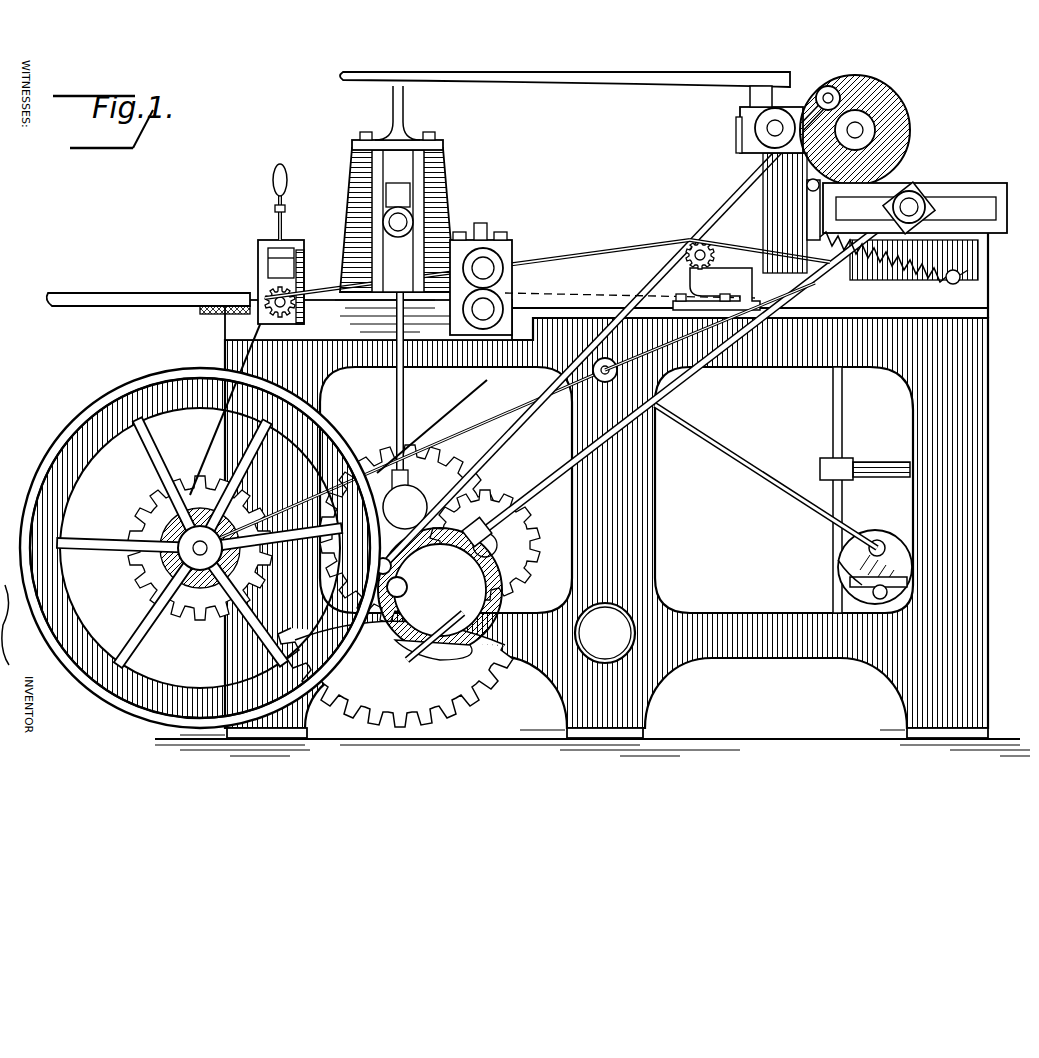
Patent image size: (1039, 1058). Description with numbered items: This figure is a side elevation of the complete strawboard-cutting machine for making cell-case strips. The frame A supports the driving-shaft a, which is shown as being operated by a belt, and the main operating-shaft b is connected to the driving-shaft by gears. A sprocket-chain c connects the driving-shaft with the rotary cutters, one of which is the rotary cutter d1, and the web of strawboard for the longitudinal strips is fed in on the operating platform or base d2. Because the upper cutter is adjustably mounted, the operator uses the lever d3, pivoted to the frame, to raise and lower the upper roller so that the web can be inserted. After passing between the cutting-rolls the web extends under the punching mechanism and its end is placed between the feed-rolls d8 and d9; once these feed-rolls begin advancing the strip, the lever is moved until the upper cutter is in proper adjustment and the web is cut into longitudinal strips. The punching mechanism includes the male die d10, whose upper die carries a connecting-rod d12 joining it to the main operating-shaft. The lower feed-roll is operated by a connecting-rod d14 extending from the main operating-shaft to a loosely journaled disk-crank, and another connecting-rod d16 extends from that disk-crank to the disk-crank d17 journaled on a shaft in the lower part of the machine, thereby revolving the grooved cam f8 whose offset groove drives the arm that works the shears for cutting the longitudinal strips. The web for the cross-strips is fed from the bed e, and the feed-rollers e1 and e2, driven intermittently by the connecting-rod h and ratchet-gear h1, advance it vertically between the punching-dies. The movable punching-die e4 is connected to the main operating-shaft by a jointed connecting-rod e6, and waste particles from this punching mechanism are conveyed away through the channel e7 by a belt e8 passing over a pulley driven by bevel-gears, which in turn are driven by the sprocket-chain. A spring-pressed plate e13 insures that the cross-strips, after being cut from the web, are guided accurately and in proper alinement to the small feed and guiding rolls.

The frame A is at (989, 402).
The driving-shaft a is at (133, 521).
The main operating-shaft b is at (388, 587).
The sprocket-chain c is at (530, 270).
The rotary cutter d1 is at (258, 297).
The operating platform or base d2 is at (187, 288).
The lever d3 is at (286, 188).
The upper feed-roll d8 is at (488, 263).
The lower feed-roll d9 is at (486, 308).
The male die d10 is at (397, 197).
The connecting-rod d12 is at (404, 403).
The connecting-rod d14 is at (480, 400).
The connecting-rod d16 is at (760, 449).
The disk-crank d17 is at (890, 543).
The bed e is at (603, 77).
The feed-roller e1 is at (792, 100).
The feed-roller e2 is at (967, 270).
The movable punching-die e4 is at (943, 200).
The connecting-rod e6 is at (688, 385).
The channel e7 is at (738, 232).
The belt e8 is at (727, 233).
The spring-pressed plate e13 is at (808, 212).
The connecting-rod h is at (753, 168).
The ratchet-gear h1 is at (890, 103).
The cam f8 is at (845, 565).